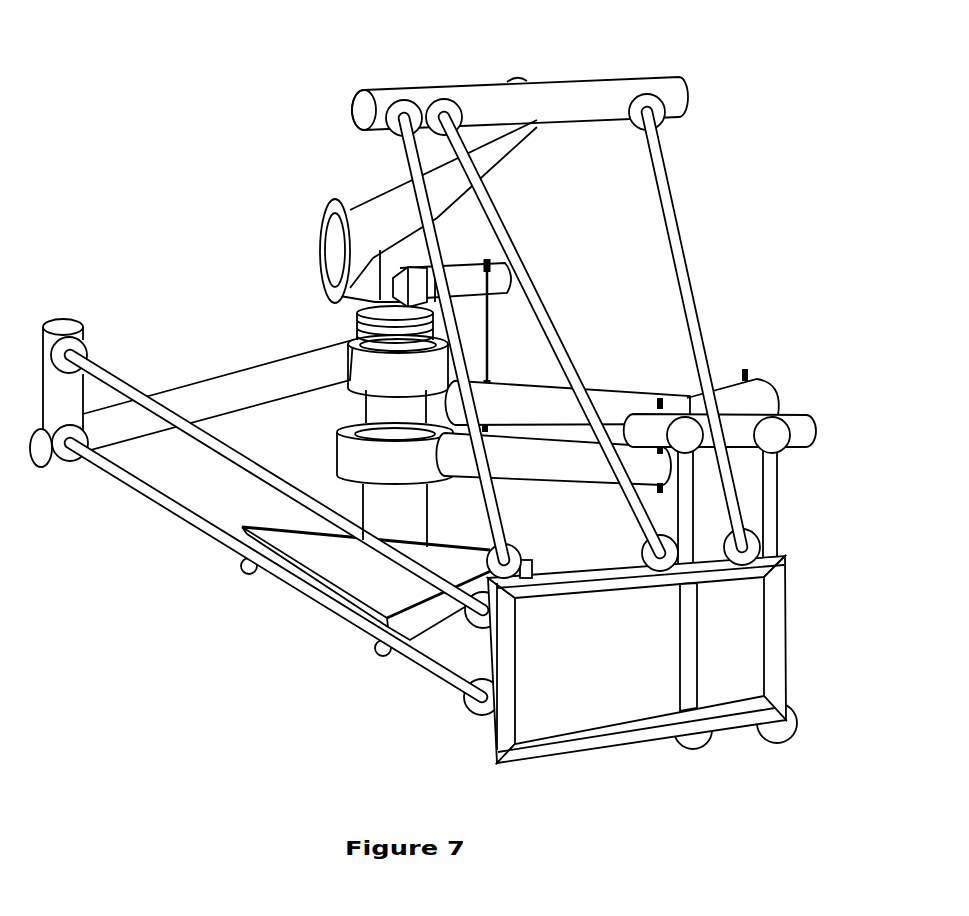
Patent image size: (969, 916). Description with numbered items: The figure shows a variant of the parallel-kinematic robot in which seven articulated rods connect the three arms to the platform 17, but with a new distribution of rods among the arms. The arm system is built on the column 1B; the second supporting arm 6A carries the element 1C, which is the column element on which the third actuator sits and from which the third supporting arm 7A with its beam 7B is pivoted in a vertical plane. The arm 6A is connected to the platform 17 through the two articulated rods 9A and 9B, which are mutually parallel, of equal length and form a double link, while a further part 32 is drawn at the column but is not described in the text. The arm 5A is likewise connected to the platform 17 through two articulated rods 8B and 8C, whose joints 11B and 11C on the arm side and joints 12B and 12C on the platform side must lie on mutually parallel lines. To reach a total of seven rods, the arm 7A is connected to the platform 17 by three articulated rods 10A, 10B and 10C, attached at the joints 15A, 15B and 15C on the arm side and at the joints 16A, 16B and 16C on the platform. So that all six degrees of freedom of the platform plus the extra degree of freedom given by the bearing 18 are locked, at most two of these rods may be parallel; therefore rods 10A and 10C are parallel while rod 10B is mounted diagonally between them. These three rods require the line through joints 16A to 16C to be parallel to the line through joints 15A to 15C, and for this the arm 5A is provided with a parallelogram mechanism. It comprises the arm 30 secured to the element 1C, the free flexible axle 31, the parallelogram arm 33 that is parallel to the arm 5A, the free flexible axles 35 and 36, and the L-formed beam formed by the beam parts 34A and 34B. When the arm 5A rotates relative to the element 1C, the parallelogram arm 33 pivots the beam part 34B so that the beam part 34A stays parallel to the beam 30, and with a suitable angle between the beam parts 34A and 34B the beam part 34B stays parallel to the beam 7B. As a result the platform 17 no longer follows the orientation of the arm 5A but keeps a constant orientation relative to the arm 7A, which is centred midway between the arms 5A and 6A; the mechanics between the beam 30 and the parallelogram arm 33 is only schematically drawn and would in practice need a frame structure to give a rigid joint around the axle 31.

The beam 7B is at (565, 97).
The third supporting arm 7A is at (393, 195).
The joint 15A is at (400, 110).
The joint 15B is at (442, 107).
The joint 15C is at (650, 107).
The articulated rod 10A is at (410, 157).
The articulated rod 10B is at (473, 182).
The articulated rod 10C is at (650, 140).
The element 1C is at (403, 253).
The arm 30 is at (420, 287).
The free flexible axle 31 is at (490, 330).
The bearing 18 is at (355, 322).
The second supporting arm 6A is at (220, 392).
The column 1B is at (373, 405).
The lower collar 32 is at (407, 410).
The articulated rod 9A is at (240, 460).
The articulated rod 9B is at (207, 527).
The parallelogram arm 33 is at (600, 400).
The arm 5A is at (570, 457).
The beam part 34A is at (757, 387).
The beam part 34B is at (733, 433).
The free flexible axle 35 is at (745, 370).
The free flexible axle 36 is at (660, 397).
The joint 11B is at (770, 450).
The joint 11C is at (687, 437).
The articulated rod 8B is at (770, 530).
The articulated rod 8C is at (685, 637).
The joint 16A is at (497, 560).
The joint 16B is at (653, 557).
The joint 16C is at (750, 550).
The platform 17 is at (597, 742).
The joint 12B is at (787, 747).
The joint 12C is at (703, 743).